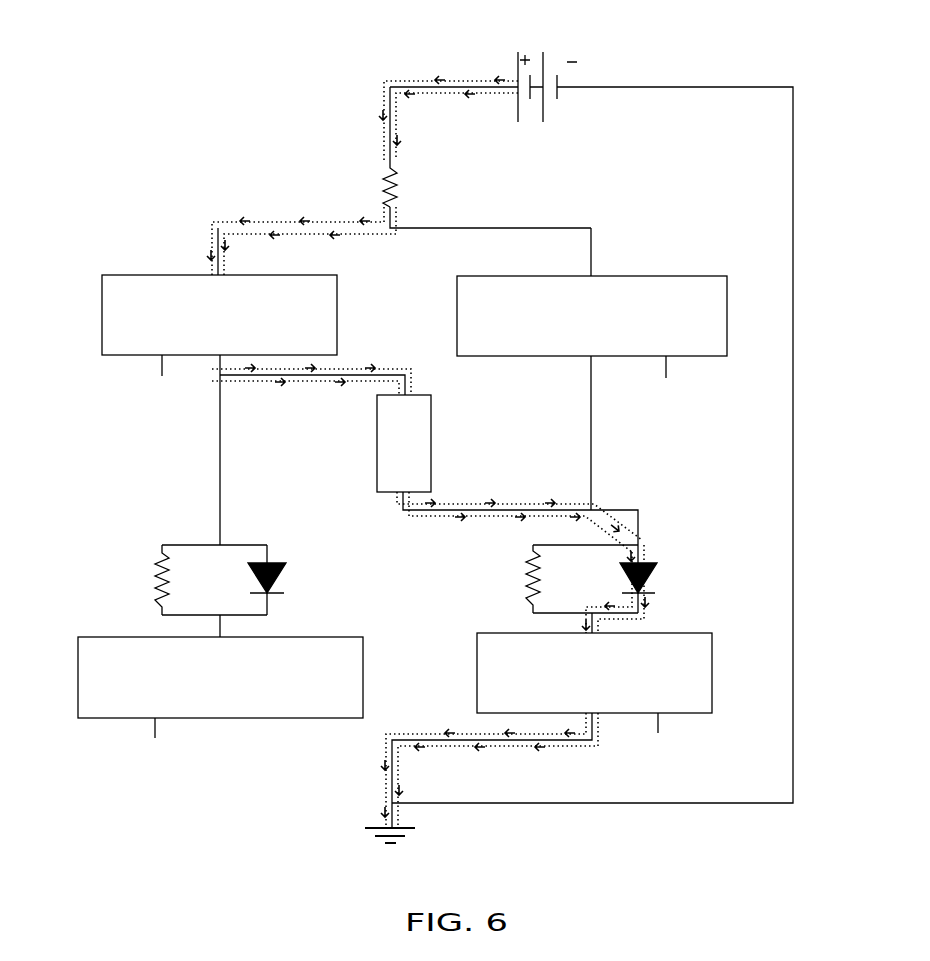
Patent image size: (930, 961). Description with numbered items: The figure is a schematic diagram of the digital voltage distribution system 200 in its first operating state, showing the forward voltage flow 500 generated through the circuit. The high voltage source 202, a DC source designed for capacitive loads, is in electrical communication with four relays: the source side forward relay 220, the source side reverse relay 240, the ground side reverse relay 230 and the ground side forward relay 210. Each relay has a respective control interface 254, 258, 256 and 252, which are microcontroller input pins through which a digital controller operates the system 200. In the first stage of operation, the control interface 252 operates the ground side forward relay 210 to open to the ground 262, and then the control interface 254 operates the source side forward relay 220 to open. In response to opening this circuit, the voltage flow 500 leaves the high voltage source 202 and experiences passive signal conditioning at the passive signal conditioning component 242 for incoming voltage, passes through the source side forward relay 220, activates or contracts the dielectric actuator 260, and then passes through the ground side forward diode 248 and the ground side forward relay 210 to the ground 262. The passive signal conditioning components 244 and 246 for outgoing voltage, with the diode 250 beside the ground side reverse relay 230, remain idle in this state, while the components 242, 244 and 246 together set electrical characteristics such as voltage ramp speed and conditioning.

The digital voltage distribution system 200 is at (128, 40).
The voltage flow 500 is at (365, 78).
The high voltage source 202 is at (530, 54).
The passive signal conditioning component 242 is at (380, 184).
The source side forward relay 220 is at (175, 273).
The source side reverse relay 240 is at (525, 275).
The control interface 254 is at (181, 434).
The control interface 258 is at (686, 434).
The dielectric actuator 260 is at (376, 440).
The passive signal conditioning component 246 is at (156, 590).
The diode 250 is at (277, 568).
The passive signal conditioning component 244 is at (531, 592).
The ground side forward diode 248 is at (652, 568).
The ground side reverse relay 230 is at (292, 636).
The ground side forward relay 210 is at (654, 632).
The control interface 256 is at (173, 790).
The control interface 252 is at (677, 790).
The ground 262 is at (370, 824).